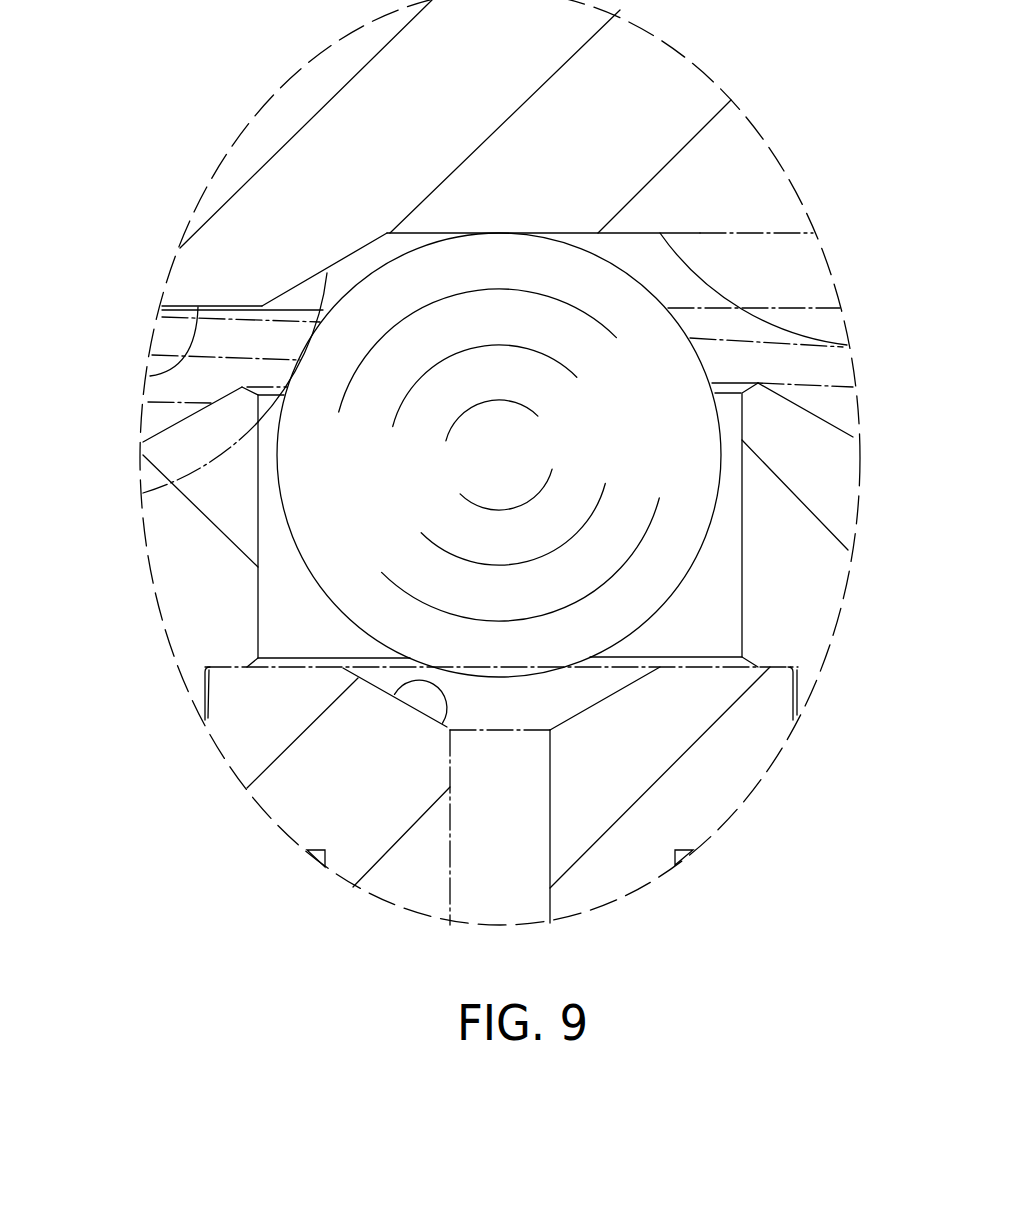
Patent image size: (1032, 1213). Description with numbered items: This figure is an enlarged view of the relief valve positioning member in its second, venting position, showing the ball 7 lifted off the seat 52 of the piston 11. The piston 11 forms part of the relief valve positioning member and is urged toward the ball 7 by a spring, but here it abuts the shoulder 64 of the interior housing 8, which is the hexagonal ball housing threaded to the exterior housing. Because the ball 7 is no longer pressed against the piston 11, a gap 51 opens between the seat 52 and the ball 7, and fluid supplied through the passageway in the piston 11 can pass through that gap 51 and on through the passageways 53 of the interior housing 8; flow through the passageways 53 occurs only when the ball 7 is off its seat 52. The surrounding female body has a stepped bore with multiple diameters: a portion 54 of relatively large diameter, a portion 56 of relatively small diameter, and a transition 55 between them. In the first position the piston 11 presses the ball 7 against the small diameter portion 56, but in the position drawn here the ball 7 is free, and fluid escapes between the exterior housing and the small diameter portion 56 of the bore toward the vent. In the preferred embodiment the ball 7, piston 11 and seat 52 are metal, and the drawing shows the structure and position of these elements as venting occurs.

The ball 7 is at (468, 345).
The interior housing 8 is at (208, 580).
The piston 11 is at (262, 707).
The gap 51 is at (547, 700).
The seat 52 is at (447, 727).
The passageways 53 is at (728, 470).
The large diameter bore portion 54 is at (843, 347).
The transition 55 is at (143, 493).
The small diameter bore portion 56 is at (150, 376).
The shoulder 64 is at (200, 668).